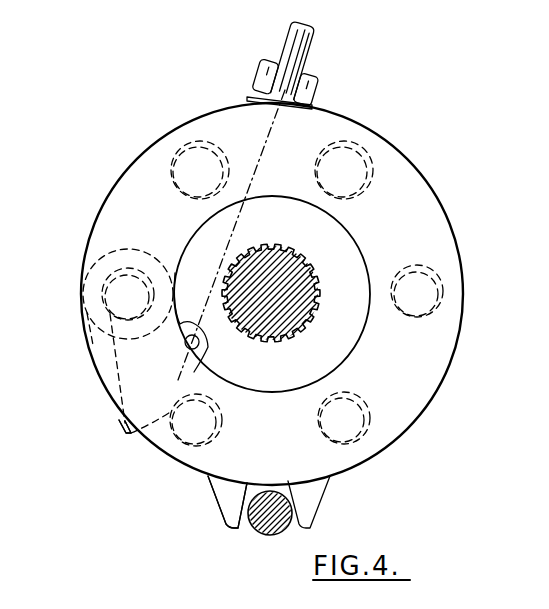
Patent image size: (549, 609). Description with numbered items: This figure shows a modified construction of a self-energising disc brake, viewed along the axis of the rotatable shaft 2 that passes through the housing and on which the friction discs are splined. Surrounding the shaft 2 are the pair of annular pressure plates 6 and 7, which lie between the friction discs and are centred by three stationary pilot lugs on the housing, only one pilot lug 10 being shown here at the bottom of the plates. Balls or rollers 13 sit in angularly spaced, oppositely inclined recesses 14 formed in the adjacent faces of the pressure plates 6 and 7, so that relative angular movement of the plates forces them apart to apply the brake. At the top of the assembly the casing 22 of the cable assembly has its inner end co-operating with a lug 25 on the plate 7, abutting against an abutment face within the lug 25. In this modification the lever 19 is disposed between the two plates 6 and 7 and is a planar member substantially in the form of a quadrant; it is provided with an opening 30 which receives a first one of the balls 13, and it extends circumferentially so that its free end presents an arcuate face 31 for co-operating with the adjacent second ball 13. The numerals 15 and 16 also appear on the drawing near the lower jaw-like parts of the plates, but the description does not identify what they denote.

The rotatable shaft 2 is at (295, 280).
The annular pressure plate 6 is at (413, 380).
The annular pressure plate 7 is at (213, 480).
The stationary pilot lug 10 is at (268, 523).
The balls or rollers 13 is at (120, 289).
The inclined recesses 14 is at (205, 145).
The jaw 15 is at (310, 493).
The jaw 16 is at (233, 497).
The lever 19 is at (118, 357).
The casing 22 is at (296, 38).
The lug 25 is at (262, 72).
The opening 30 is at (110, 317).
The arcuate face 31 is at (128, 430).